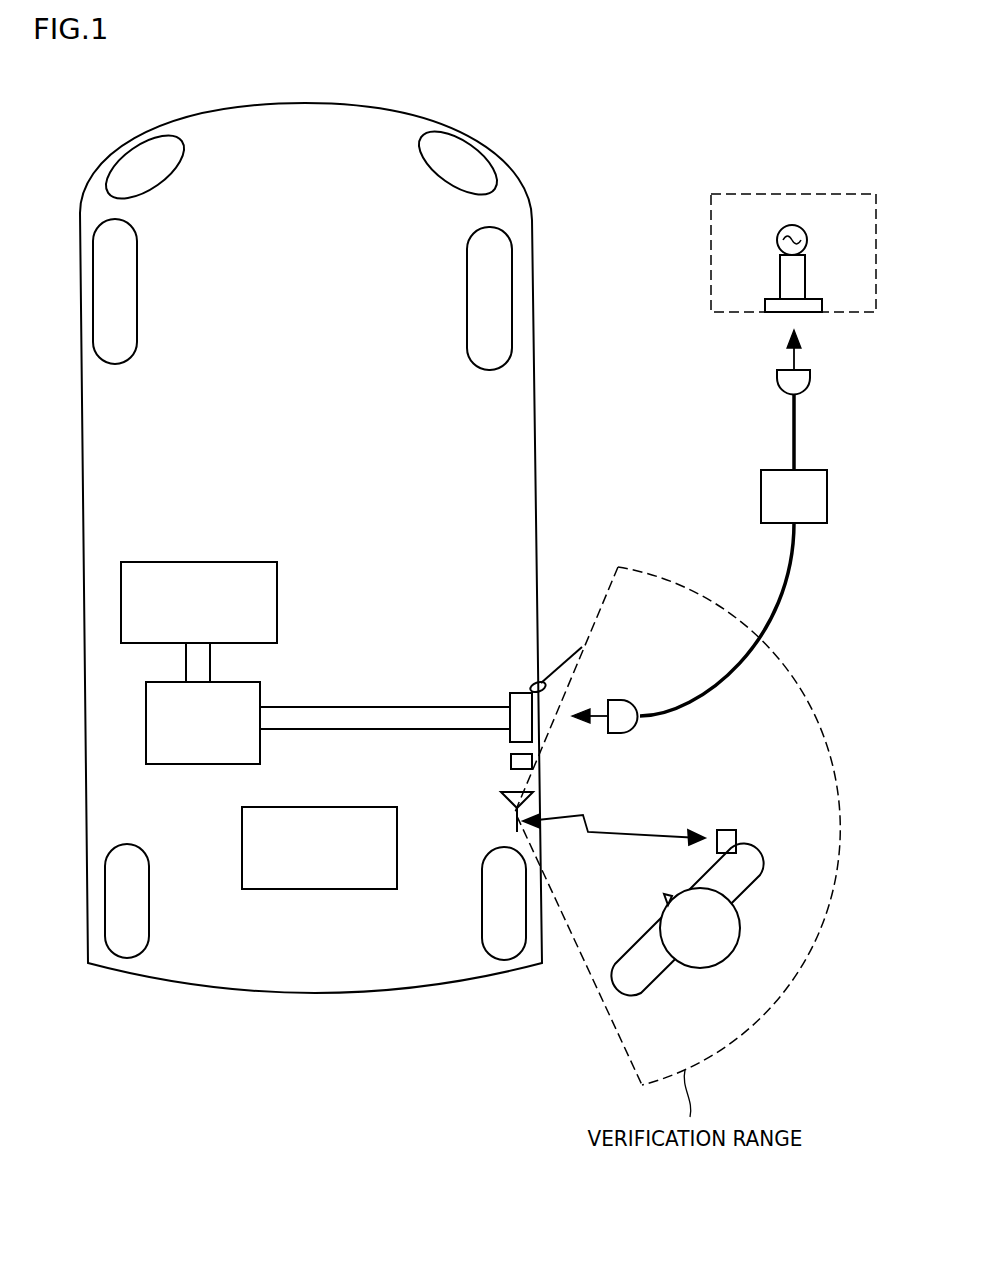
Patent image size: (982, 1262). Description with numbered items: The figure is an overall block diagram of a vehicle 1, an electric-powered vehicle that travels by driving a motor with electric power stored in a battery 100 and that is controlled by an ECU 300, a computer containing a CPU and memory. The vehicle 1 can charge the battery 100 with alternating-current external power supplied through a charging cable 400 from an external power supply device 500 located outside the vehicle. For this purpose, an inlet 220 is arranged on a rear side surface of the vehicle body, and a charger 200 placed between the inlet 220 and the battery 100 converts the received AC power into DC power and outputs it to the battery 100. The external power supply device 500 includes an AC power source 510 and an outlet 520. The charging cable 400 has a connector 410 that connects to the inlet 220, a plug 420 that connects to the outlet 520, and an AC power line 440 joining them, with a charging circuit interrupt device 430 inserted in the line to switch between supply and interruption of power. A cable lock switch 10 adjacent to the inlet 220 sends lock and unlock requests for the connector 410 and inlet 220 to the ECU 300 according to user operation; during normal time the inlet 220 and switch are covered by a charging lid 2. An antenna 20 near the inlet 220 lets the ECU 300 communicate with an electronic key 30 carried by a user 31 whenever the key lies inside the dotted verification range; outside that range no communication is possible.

The vehicle 1 is at (300, 103).
The charging lid 2 is at (572, 650).
The cable lock switch 10 is at (511, 761).
The antenna 20 is at (507, 803).
The electronic key 30 is at (727, 830).
The user 31 is at (770, 865).
The battery 100 is at (277, 603).
The charger 200 is at (200, 764).
The inlet 220 is at (515, 693).
The ECU 300 is at (320, 889).
The charging cable 400 is at (733, 531).
The connector 410 is at (617, 700).
The plug 420 is at (812, 376).
The charging circuit interrupt device 430 is at (832, 496).
The AC power line 440 is at (786, 621).
The external power supply device 500 is at (803, 240).
The AC power source 510 is at (804, 228).
The outlet 520 is at (814, 299).